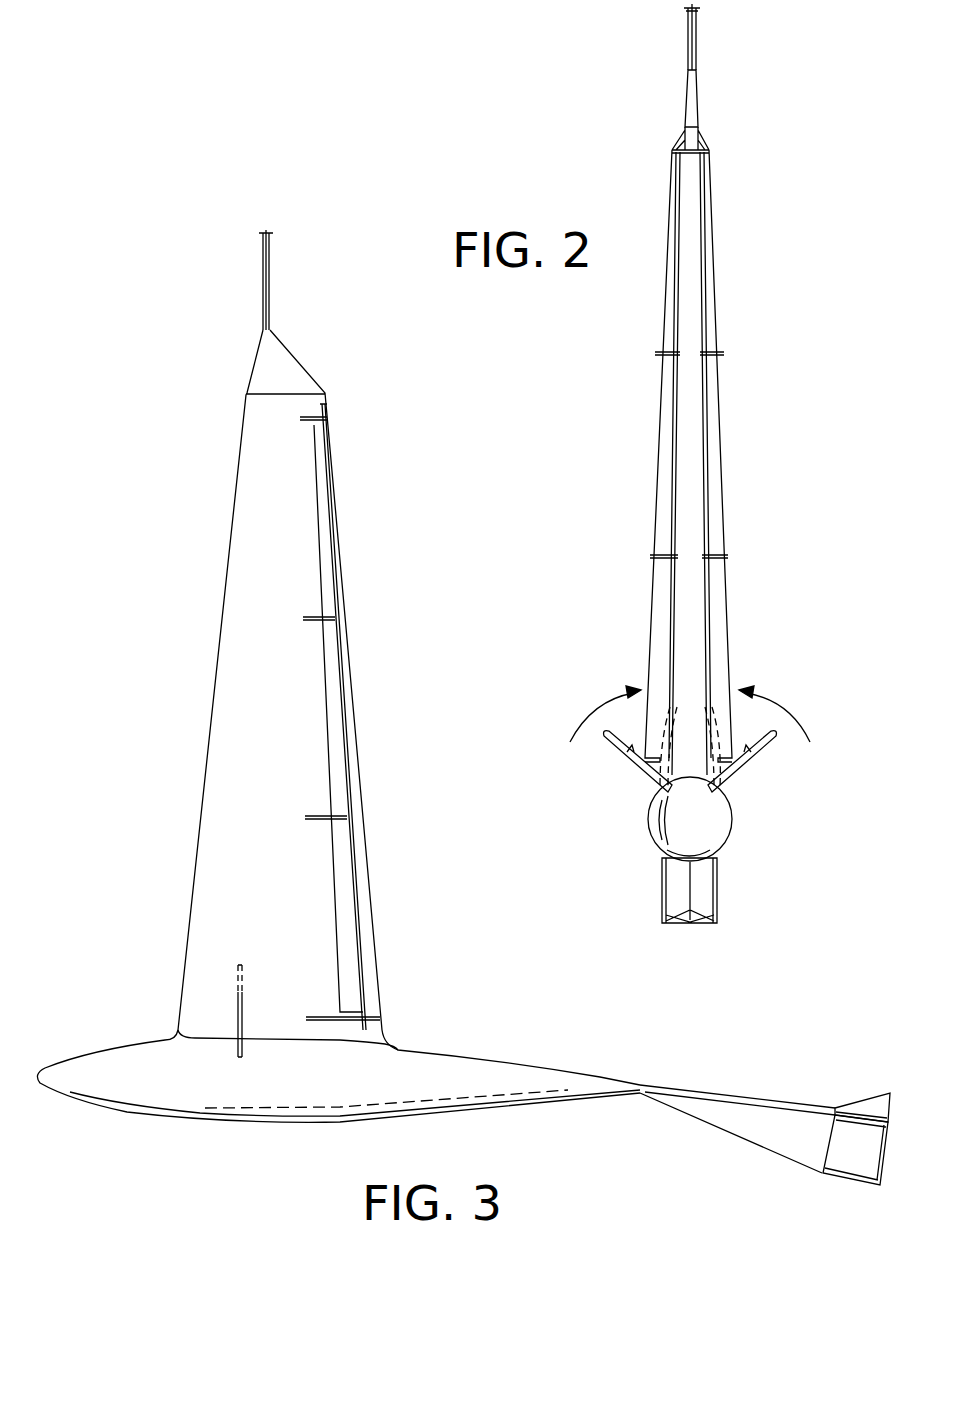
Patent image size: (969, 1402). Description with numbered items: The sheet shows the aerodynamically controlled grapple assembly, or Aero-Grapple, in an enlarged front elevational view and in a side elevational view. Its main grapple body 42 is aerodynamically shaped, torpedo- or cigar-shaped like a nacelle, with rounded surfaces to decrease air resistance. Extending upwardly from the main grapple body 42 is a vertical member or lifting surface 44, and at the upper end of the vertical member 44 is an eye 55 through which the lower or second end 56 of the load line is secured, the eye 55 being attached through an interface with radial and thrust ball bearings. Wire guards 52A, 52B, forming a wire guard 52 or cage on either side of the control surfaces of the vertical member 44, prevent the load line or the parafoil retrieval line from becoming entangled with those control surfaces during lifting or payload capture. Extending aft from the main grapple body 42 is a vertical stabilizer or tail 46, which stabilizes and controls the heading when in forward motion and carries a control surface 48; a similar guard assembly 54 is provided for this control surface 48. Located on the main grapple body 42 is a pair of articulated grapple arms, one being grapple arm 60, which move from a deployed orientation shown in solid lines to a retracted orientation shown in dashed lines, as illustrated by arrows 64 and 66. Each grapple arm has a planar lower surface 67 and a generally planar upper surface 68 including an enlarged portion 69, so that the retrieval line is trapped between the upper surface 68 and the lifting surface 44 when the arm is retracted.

In FIG. 3, the main grapple body 42 is at (138, 1087).
In FIG. 3, the vertical member 44 is at (233, 605).
In FIG. 3, the vertical stabilizer 46 is at (743, 1128).
In FIG. 3, the control surface 48 is at (853, 1153).
In FIG. 3, the wire guard 52 is at (355, 935).
In FIG. 2, the wire guard 52A is at (720, 425).
In FIG. 2, the wire guard 52B is at (657, 425).
In FIG. 2, the guard assembly 54 is at (718, 895).
In FIG. 3, the guard assembly 54 is at (868, 1103).
In FIG. 2, the eye 55 is at (697, 100).
In FIG. 2, the second end of the load line 56 is at (694, 48).
In FIG. 3, the grapple arm 60 is at (237, 1010).
In FIG. 2, the arrow 64 is at (793, 715).
In FIG. 2, the arrow 66 is at (592, 708).
In FIG. 2, the planar lower surface 67 is at (752, 775).
In FIG. 2, the upper surface 68 is at (650, 785).
In FIG. 2, the enlarged portion 69 is at (625, 760).